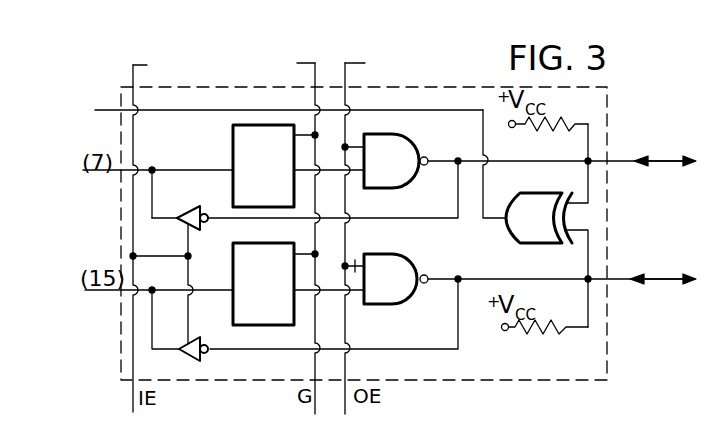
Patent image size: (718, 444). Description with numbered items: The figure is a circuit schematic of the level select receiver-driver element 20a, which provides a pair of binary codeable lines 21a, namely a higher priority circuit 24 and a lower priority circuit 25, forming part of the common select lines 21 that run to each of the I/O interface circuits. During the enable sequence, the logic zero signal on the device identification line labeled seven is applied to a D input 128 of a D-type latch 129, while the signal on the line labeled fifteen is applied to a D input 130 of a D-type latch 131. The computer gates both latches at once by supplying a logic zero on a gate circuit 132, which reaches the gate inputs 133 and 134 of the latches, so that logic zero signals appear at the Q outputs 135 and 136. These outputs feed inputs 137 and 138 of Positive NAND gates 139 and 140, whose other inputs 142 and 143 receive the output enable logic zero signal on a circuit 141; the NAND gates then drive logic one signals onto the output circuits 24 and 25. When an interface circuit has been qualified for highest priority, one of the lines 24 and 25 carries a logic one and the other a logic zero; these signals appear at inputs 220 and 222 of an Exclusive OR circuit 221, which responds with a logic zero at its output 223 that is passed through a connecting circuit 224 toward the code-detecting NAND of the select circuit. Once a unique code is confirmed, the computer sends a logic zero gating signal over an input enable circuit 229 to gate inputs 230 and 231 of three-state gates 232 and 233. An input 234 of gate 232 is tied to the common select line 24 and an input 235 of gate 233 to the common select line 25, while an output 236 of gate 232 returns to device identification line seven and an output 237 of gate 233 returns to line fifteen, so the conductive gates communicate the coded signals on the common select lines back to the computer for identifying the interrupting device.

The level select receiver-driver element 20a is at (453, 46).
The connecting circuit 224 is at (110, 110).
The input enable circuit 229 is at (147, 65).
The gate circuit 132 is at (315, 63).
The output enable circuit 141 is at (345, 63).
The D input 128 is at (200, 170).
The D input 130 is at (208, 289).
The D-type latch 129 is at (268, 204).
The D-type latch 131 is at (268, 279).
The gate input 133 is at (302, 133).
The Q output 135 is at (302, 220).
The Q output 136 is at (292, 303).
The Positive NAND gate 139 is at (400, 174).
The Positive NAND gate 140 is at (400, 294).
The input circuit 142 is at (348, 147).
The gate input 134 is at (318, 236).
The input circuit 143 is at (355, 265).
The input 137 is at (358, 176).
The input 138 is at (362, 300).
The input 235 is at (298, 349).
The input 234 is at (227, 217).
The three-state gate 232 is at (178, 212).
The output 236 is at (165, 223).
The gate input 230 is at (190, 236).
The gate input 231 is at (196, 320).
The three-state gate 233 is at (197, 360).
The output 237 is at (165, 349).
The Exclusive OR circuit 221 is at (545, 229).
The output 223 is at (486, 178).
The input 220 is at (578, 205).
The input 222 is at (588, 236).
The common select lines 21 is at (652, 229).
The higher priority circuit 24 is at (616, 158).
The lower priority circuit 25 is at (615, 279).
The pair of binary codeable lines 21a is at (660, 161).